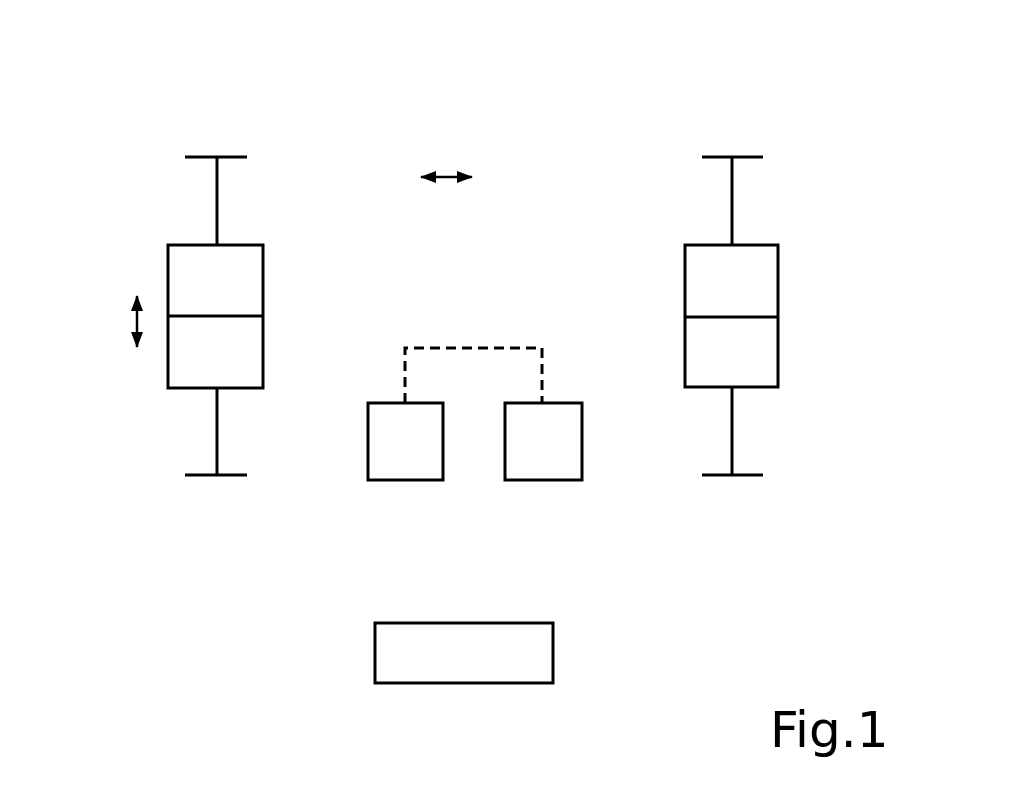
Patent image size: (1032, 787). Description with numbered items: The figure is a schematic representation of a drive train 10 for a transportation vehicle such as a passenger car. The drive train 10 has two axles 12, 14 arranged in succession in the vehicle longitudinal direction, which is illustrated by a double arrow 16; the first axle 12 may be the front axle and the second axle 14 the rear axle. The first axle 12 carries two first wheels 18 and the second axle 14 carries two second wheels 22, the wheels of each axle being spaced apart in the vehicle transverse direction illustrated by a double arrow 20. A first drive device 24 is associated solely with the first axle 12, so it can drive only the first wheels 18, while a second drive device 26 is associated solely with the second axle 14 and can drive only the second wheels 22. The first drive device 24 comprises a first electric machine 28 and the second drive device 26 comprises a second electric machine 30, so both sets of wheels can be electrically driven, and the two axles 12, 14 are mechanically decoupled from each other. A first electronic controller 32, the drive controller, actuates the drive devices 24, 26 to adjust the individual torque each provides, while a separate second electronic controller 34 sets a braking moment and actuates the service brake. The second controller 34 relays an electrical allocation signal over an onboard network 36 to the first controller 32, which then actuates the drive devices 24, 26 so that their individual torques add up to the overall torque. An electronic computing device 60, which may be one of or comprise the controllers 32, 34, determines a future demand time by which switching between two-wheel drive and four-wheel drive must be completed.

The drive train 10 is at (822, 108).
The first axle 12 is at (193, 479).
The second axle 14 is at (747, 480).
The double arrow 16 is at (450, 177).
The first wheels 18 is at (233, 157).
The double arrow 20 is at (132, 318).
The second wheels 22 is at (714, 155).
The first drive device 24 is at (270, 252).
The second drive device 26 is at (790, 255).
The first electric machine 28 is at (265, 350).
The second electric machine 30 is at (780, 352).
The first electronic controller 32 is at (403, 480).
The second electronic controller 34 is at (542, 480).
The onboard network 36 is at (468, 348).
The electronic computing device 60 is at (555, 650).